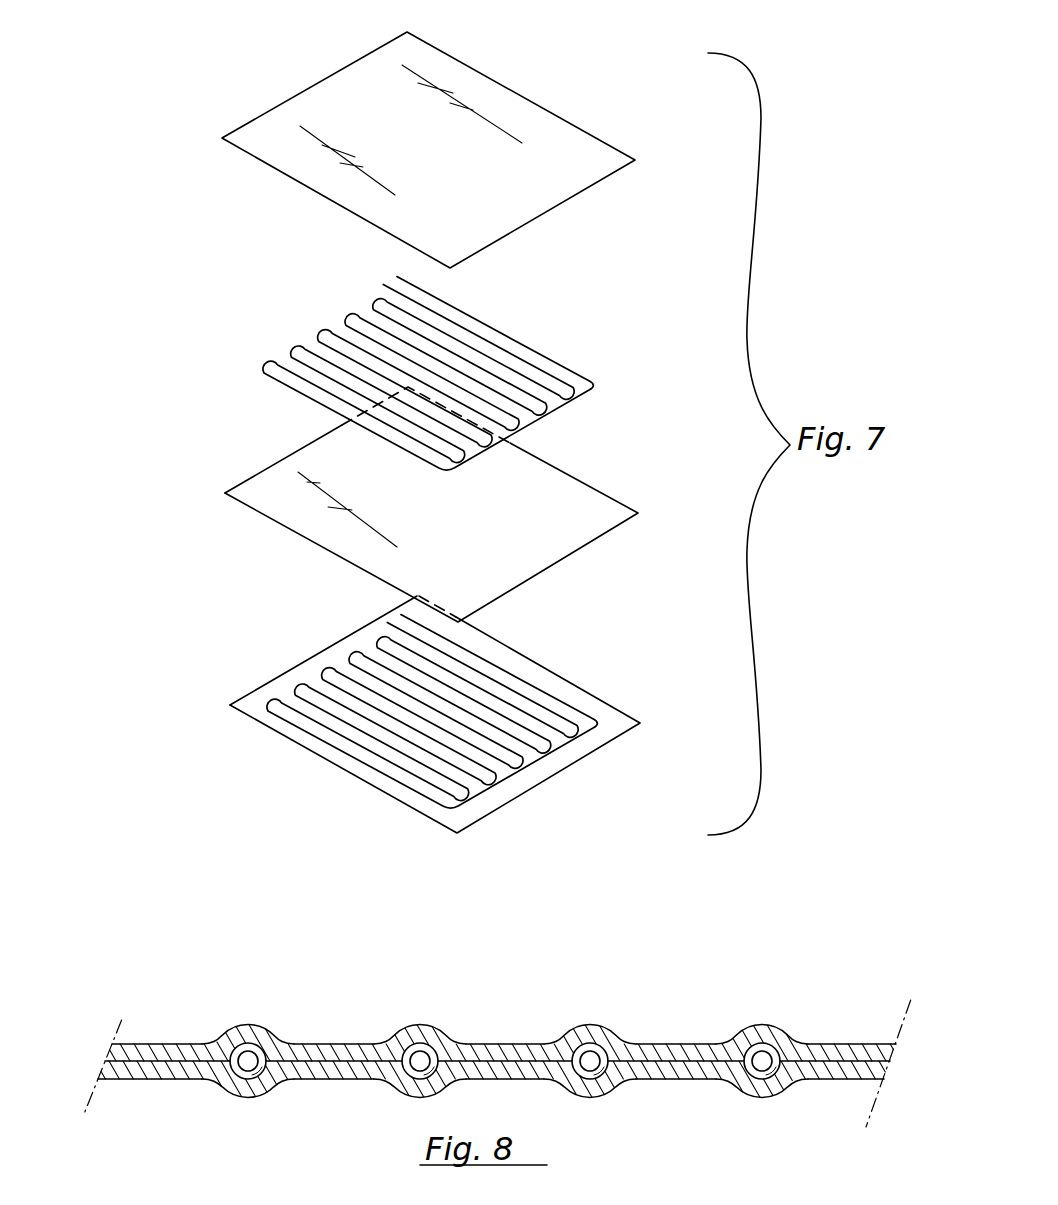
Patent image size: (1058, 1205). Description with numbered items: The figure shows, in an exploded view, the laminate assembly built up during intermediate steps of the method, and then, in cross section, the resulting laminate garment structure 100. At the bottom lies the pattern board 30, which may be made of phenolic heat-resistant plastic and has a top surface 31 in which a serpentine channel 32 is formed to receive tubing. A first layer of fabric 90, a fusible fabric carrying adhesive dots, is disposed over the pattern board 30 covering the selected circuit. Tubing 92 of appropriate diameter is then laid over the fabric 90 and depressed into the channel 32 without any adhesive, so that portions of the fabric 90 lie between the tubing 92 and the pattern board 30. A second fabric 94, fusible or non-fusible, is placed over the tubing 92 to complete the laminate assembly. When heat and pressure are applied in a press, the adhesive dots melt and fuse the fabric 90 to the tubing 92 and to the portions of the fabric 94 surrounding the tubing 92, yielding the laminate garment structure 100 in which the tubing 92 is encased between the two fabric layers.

In FIG. 7, the pattern board 30 is at (444, 825).
In FIG. 7, the top surface 31 is at (608, 720).
In FIG. 7, the channel 32 is at (326, 740).
In FIG. 7, the first layer of fabric 90 is at (577, 556).
In FIG. 8, the first layer of fabric 90 is at (345, 1080).
In FIG. 7, the tubing 92 is at (303, 394).
In FIG. 8, the tubing 92 is at (430, 1048).
In FIG. 7, the second fabric 94 is at (310, 179).
In FIG. 8, the second fabric 94 is at (332, 1044).
In FIG. 8, the laminate garment structure 100 is at (203, 1003).